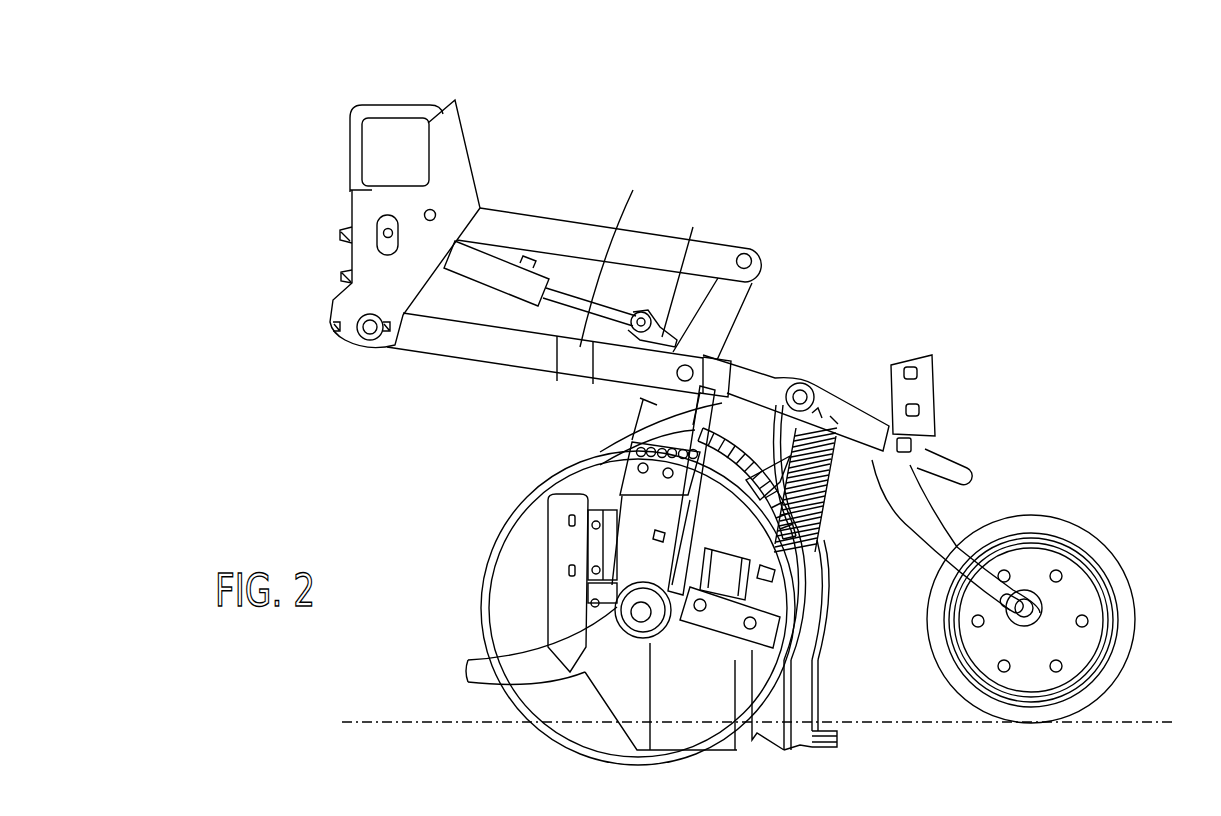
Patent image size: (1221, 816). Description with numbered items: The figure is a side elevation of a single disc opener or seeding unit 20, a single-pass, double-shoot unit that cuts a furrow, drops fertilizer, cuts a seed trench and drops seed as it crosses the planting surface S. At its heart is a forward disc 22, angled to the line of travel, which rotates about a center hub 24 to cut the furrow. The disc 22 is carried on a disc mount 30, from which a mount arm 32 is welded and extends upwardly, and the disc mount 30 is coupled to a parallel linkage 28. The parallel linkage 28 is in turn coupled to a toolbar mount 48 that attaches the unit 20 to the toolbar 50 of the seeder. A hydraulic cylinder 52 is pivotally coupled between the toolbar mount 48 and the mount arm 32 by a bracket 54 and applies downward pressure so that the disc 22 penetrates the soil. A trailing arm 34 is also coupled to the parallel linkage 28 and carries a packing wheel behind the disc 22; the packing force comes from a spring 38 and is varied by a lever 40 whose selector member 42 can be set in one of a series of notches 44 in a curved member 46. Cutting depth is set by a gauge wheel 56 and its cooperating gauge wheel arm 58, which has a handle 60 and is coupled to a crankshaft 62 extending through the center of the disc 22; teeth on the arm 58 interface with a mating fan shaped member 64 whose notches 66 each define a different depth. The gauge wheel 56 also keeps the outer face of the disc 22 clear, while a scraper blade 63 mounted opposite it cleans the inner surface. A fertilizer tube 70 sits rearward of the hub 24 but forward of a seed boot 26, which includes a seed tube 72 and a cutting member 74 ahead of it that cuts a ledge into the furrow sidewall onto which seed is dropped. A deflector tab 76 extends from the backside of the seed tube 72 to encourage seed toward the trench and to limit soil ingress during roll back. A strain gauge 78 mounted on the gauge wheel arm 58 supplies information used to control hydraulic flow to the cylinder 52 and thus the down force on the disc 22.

The disc opener unit 20 is at (1040, 263).
The forward disc 22 is at (478, 608).
The center hub 24 is at (493, 657).
The seed boot 26 is at (798, 753).
The parallel linkage 28 is at (586, 228).
The disc mount 30 is at (627, 547).
The mount arm 32 is at (727, 295).
The trailing arm 34 is at (933, 552).
The spring 38 is at (837, 465).
The lever 40 is at (963, 462).
The selector member 42 is at (921, 430).
The notches 44 is at (912, 404).
The curved member 46 is at (1072, 528).
The toolbar mount 48 is at (450, 101).
The toolbar 50 is at (385, 152).
The hydraulic cylinder 52 is at (485, 258).
The bracket 54 is at (694, 230).
The gauge wheel 56 is at (830, 538).
The gauge wheel arm 58 is at (630, 472).
The handle 60 is at (643, 410).
The crankshaft 62 is at (512, 694).
The scraper blade 63 is at (703, 705).
The fan shaped member 64 is at (752, 460).
The notches 66 is at (636, 452).
The fertilizer tube 70 is at (777, 378).
The seed tube 72 is at (812, 656).
The cutting member 74 is at (765, 717).
The deflector tab 76 is at (847, 750).
The strain gauge 78 is at (625, 500).
The planting surface S is at (1140, 722).